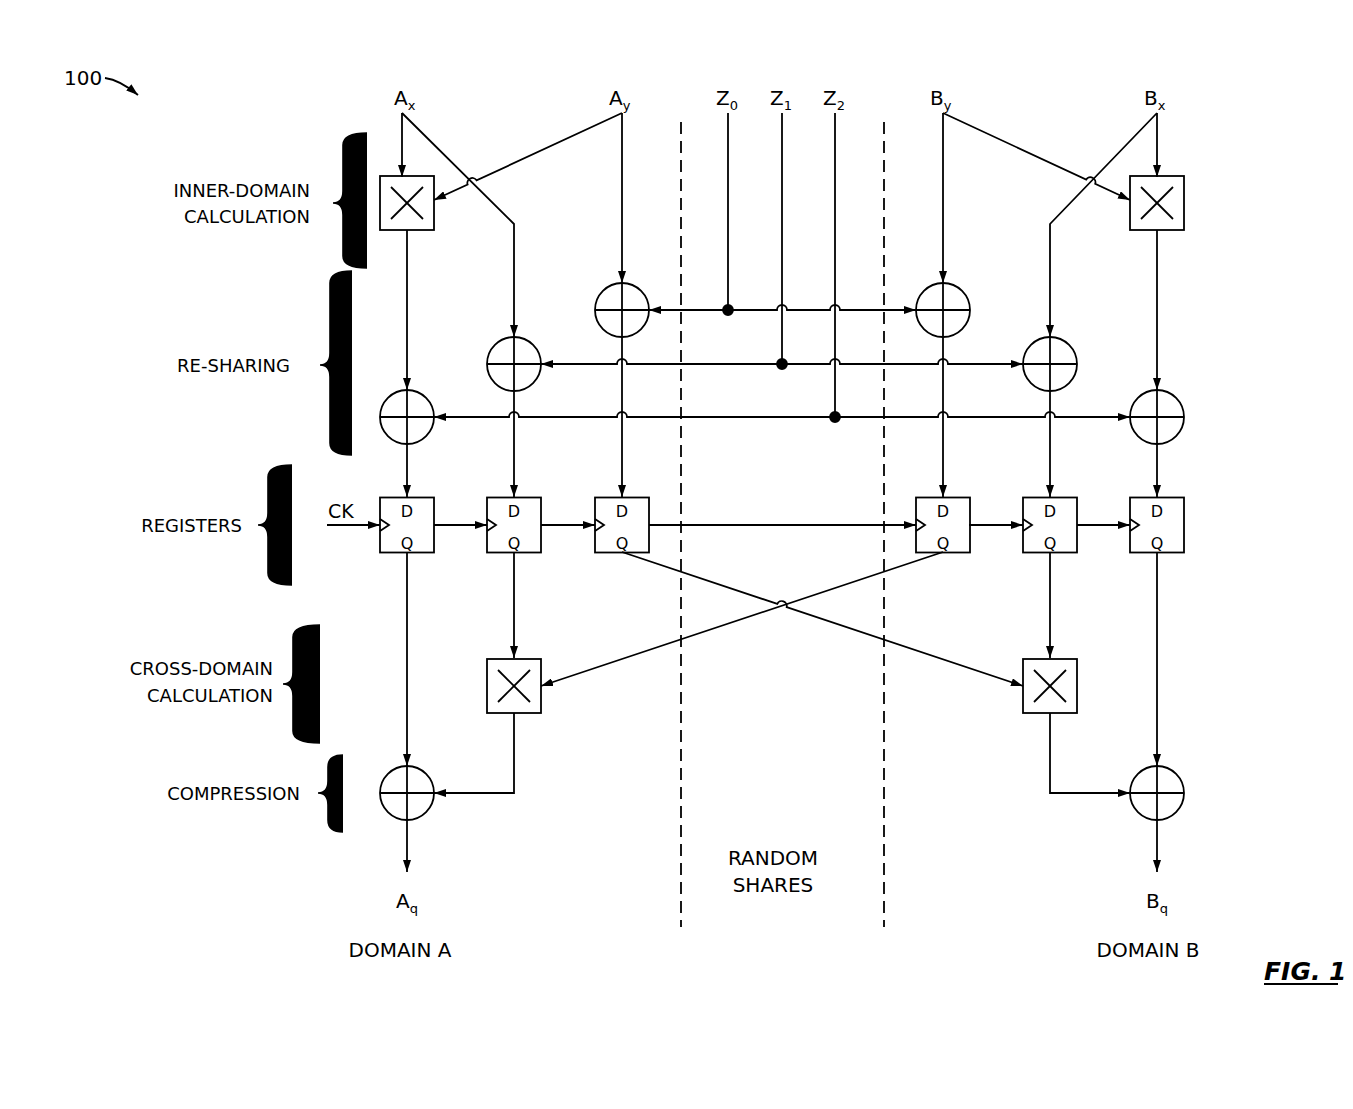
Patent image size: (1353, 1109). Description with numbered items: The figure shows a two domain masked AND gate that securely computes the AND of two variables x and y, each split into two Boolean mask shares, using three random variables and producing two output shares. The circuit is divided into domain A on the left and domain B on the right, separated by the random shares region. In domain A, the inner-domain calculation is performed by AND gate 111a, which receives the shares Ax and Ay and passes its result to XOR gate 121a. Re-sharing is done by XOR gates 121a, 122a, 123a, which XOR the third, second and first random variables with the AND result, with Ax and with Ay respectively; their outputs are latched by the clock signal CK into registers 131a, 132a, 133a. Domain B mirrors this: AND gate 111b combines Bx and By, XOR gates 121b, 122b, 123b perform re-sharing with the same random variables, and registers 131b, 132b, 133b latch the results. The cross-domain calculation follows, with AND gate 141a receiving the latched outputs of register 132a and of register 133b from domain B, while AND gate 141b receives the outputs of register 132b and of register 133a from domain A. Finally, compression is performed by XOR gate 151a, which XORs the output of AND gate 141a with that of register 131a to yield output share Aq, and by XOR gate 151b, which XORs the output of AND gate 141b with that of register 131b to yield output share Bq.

The AND gate 111a is at (421, 231).
The AND gate 111b is at (1144, 231).
The XOR gate 121a is at (415, 392).
The XOR gate 121b is at (1148, 392).
The XOR gate 122a is at (529, 387).
The XOR gate 122b is at (1035, 388).
The XOR gate 123a is at (605, 292).
The XOR gate 123b is at (961, 292).
The register 131a is at (389, 554).
The register 131b is at (1174, 554).
The register 132a is at (496, 554).
The register 132b is at (1066, 554).
The register 133a is at (604, 554).
The register 133b is at (959, 554).
The AND gate 141a is at (531, 714).
The AND gate 141b is at (1033, 714).
The XOR gate 151a is at (428, 815).
The XOR gate 151b is at (1139, 815).